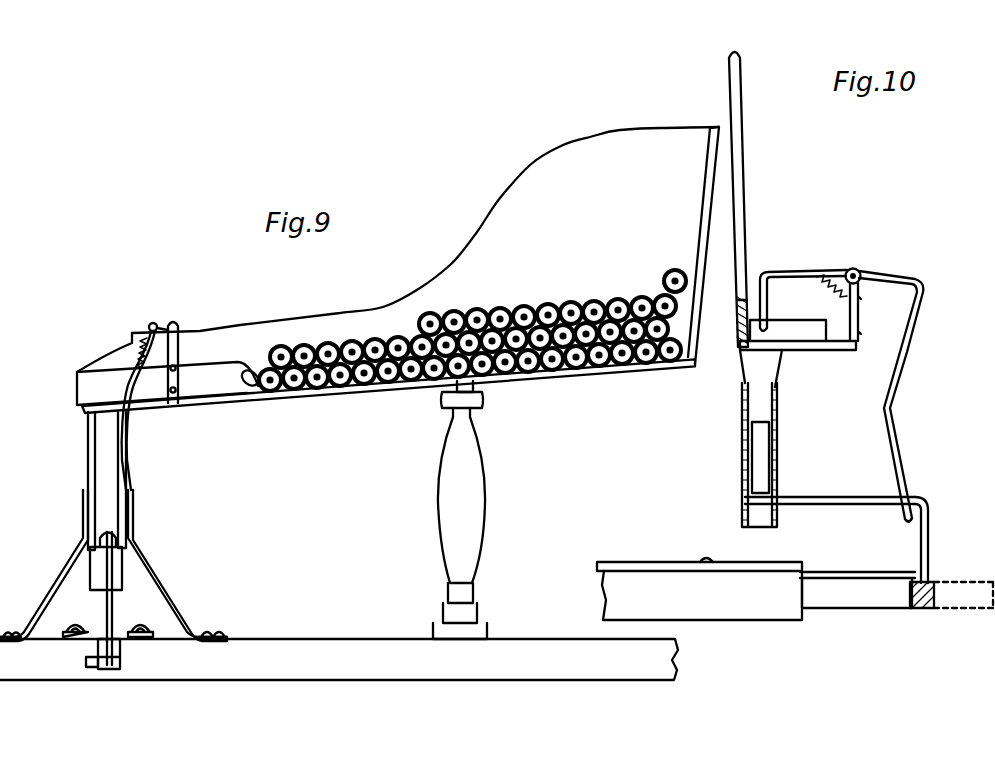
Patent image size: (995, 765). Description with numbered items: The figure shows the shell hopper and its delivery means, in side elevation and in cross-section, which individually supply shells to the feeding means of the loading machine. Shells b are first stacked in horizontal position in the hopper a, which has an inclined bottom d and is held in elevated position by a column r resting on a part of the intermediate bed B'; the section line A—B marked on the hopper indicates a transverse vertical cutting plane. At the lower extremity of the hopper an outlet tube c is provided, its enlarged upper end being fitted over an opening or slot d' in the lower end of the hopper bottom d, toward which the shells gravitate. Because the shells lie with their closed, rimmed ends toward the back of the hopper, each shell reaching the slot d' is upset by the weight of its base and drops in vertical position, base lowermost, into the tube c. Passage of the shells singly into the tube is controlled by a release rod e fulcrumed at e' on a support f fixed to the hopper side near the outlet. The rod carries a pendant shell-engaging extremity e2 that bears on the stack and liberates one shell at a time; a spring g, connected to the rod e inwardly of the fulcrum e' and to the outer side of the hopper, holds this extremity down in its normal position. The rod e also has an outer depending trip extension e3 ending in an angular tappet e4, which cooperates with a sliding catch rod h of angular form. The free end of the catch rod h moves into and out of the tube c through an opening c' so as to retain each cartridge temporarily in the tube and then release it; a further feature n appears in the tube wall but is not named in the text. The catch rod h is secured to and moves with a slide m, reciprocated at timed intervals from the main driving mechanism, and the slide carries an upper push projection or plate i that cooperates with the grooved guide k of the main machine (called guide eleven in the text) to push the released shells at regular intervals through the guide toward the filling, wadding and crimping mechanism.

In FIG. 9, the hopper a is at (398, 249).
In FIG. 10, the hopper a is at (749, 199).
In FIG. 9, the cartridges / balls in hopper b is at (330, 348).
In FIG. 10, the cartridges / balls in hopper b is at (737, 347).
In FIG. 9, the outlet tube c is at (107, 481).
In FIG. 10, the outlet tube c is at (772, 449).
In FIG. 10, the opening c' is at (830, 489).
In FIG. 9, the inclined bottom d is at (388, 395).
In FIG. 10, the inclined bottom d is at (798, 355).
In FIG. 10, the opening or slot d' is at (726, 382).
In FIG. 9, the release rod e is at (169, 403).
In FIG. 9, the fulcrum e' is at (158, 392).
In FIG. 10, the fulcrum e' is at (870, 266).
In FIG. 10, the shell engaging extremity e2 is at (760, 280).
In FIG. 9, the trip extension e3 is at (131, 491).
In FIG. 10, the trip extension e3 is at (908, 350).
In FIG. 9, the angular tappet e4 is at (100, 552).
In FIG. 10, the angular tappet e4 is at (905, 516).
In FIG. 9, the support f is at (178, 359).
In FIG. 10, the support f is at (860, 293).
In FIG. 9, the spring g is at (133, 360).
In FIG. 10, the spring g is at (825, 292).
In FIG. 9, the sliding catch rod h is at (121, 588).
In FIG. 10, the sliding catch rod h is at (740, 473).
In FIG. 10, the push projection or plate i is at (857, 578).
In FIG. 10, the tray k is at (743, 573).
In FIG. 9, the slide m is at (122, 658).
In FIG. 10, the slide m is at (936, 582).
In FIG. 10, the slot n is at (752, 435).
In FIG. 9, the column r is at (465, 478).
In FIG. 9, the section line A is at (108, 343).
In FIG. 9, the section line B is at (104, 703).
In FIG. 9, the intermediate bed B' is at (339, 641).